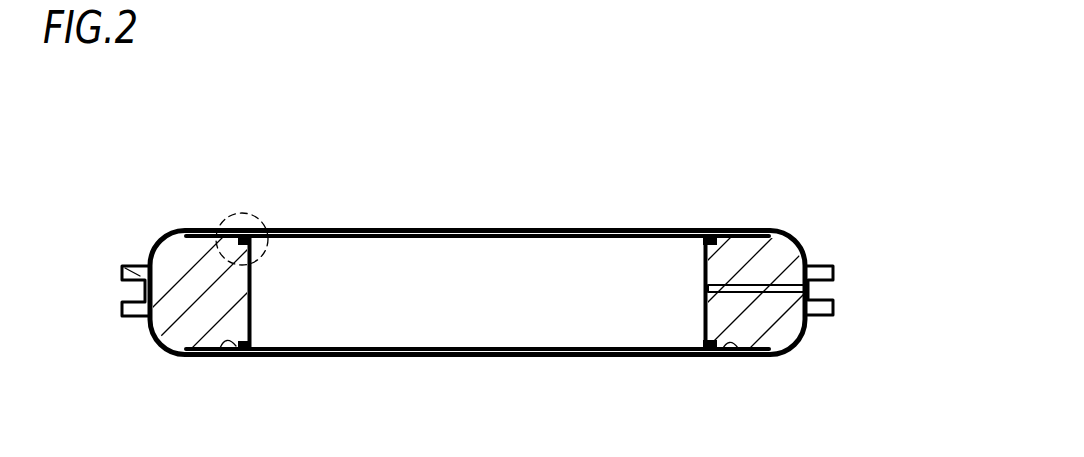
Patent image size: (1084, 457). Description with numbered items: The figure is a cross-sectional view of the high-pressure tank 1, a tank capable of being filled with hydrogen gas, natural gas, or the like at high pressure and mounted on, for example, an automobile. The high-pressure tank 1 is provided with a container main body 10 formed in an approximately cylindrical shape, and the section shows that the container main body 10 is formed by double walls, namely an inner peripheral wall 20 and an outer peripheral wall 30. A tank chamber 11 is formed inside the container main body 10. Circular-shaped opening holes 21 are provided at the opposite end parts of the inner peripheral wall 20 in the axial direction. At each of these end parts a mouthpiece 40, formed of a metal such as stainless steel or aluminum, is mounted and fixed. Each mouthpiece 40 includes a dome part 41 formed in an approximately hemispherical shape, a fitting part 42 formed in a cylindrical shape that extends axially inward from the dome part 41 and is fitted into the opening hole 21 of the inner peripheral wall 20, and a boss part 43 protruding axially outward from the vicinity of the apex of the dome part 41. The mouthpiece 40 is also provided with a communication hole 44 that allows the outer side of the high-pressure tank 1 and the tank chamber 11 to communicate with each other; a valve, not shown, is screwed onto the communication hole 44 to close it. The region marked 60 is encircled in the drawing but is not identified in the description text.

The high-pressure tank 1 is at (702, 208).
The container main body 10 is at (478, 143).
The tank chamber 11 is at (435, 323).
The inner peripheral wall 20 is at (553, 238).
The opening hole 21 is at (218, 357).
The outer peripheral wall 30 is at (397, 229).
The mouthpiece 40 is at (180, 255).
The dome part 41 is at (163, 325).
The fitting part 42 is at (240, 315).
The boss part 43 is at (133, 267).
The communication hole 44 is at (810, 282).
The sealing portion 60 is at (247, 252).